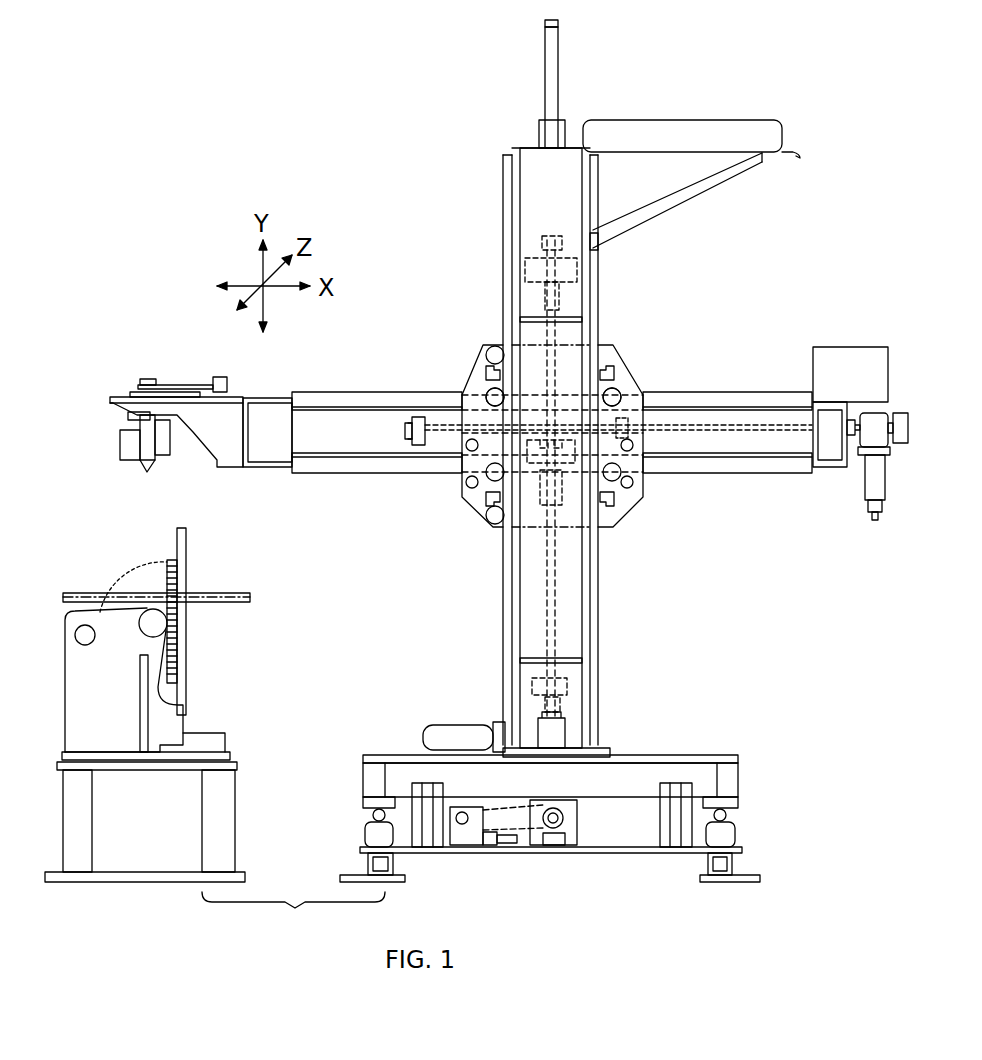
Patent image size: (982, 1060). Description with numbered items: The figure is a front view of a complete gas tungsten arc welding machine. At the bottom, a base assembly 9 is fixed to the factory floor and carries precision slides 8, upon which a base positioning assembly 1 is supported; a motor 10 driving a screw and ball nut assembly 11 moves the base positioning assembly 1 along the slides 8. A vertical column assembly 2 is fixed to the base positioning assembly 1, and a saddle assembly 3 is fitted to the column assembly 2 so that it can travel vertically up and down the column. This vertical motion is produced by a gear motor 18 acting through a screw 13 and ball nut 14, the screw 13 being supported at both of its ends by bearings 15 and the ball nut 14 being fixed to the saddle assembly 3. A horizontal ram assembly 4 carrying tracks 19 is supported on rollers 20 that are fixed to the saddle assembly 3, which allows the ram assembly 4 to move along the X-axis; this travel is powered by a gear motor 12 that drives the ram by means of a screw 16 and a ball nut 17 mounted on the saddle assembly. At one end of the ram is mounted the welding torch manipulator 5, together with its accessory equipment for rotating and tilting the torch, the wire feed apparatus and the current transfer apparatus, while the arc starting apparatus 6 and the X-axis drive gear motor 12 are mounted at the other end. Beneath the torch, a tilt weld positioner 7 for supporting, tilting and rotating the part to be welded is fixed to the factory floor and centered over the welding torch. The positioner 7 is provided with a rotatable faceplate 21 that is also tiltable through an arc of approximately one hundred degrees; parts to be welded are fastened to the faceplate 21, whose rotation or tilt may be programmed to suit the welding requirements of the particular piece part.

The base positioning assembly 1 is at (735, 778).
The column assembly 2 is at (600, 597).
The saddle assembly 3 is at (620, 525).
The ram assembly 4 is at (527, 437).
The welding torch manipulator 5 is at (80, 409).
The arc starting apparatus 6 is at (835, 358).
The tilt weld positioner 7 is at (163, 738).
The precision slides 8 is at (740, 815).
The base assembly 9 is at (735, 860).
The motor 10 is at (462, 838).
The screw and ball nut assembly 11 is at (565, 826).
The gear motor 12 is at (873, 478).
The screw 13 is at (547, 578).
The ball nut 14 is at (526, 498).
The bearings 15 is at (573, 268).
The screw 16 is at (765, 437).
The ball nut 17 is at (627, 427).
The gear motor 18 is at (432, 735).
The tracks 19 is at (430, 400).
The rollers 20 is at (487, 392).
The faceplate 21 is at (186, 543).